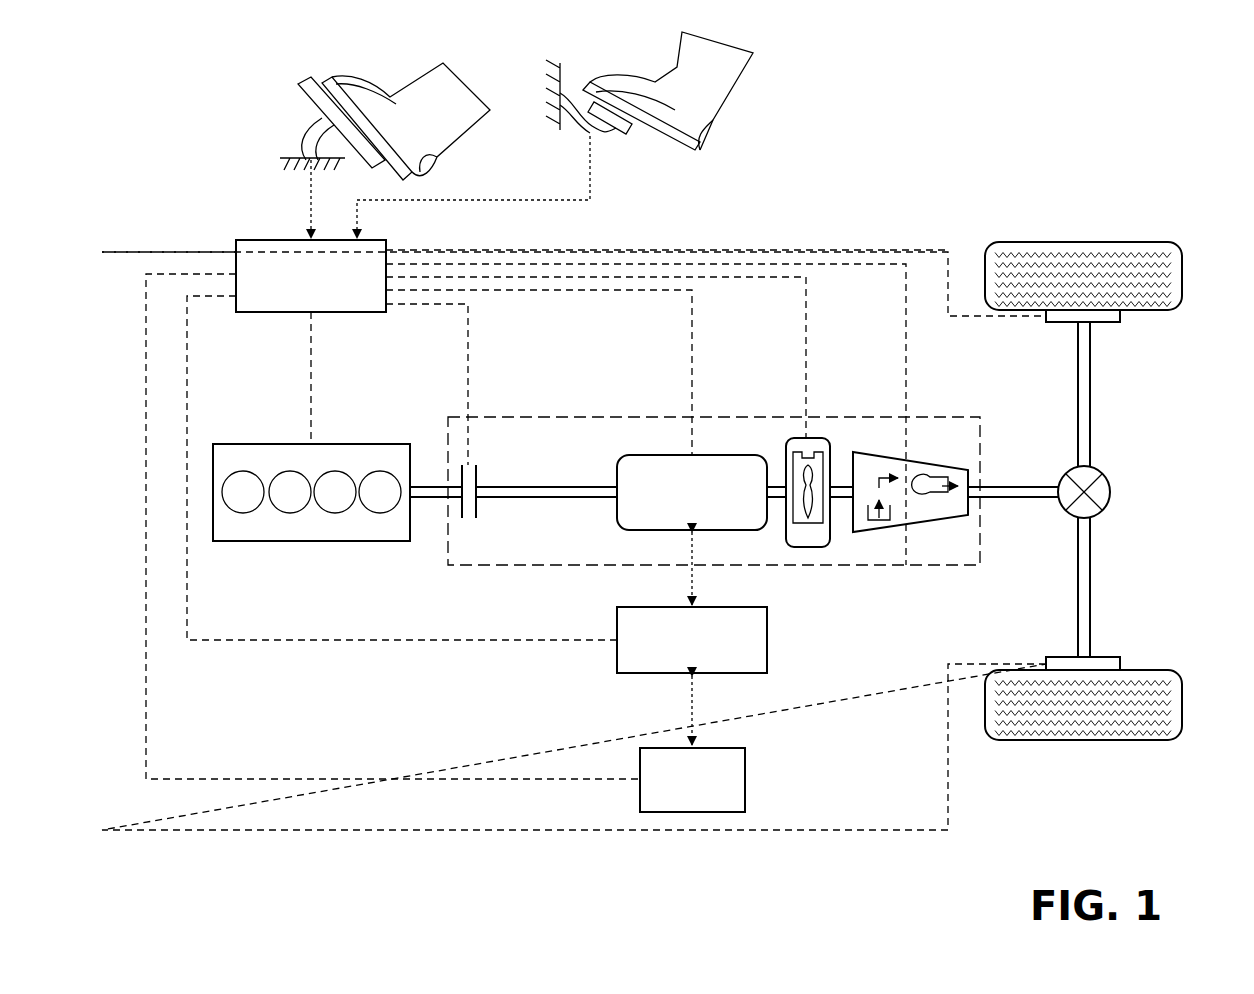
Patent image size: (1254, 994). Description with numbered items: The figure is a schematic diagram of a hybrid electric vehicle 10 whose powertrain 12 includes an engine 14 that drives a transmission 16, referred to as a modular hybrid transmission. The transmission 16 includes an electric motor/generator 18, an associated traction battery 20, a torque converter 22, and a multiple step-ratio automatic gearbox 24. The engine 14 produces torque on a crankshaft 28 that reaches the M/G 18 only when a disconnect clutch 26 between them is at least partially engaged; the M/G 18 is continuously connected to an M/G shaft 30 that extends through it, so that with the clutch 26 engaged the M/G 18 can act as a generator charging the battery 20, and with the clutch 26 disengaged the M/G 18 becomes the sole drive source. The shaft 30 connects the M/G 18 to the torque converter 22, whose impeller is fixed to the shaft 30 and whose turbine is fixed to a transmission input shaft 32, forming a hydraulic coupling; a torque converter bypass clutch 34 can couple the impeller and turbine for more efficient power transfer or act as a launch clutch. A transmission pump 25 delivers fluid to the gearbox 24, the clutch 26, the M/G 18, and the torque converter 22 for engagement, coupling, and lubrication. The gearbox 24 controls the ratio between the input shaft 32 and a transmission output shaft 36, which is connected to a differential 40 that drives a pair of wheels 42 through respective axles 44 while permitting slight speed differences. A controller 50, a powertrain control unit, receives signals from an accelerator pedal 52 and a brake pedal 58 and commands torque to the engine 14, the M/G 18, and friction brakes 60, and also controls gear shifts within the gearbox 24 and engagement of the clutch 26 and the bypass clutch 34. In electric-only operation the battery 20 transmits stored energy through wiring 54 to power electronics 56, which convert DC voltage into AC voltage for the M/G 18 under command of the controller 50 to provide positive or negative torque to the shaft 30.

The hybrid electric vehicle 10 is at (842, 155).
The powertrain 12 is at (455, 668).
The engine 14 is at (262, 444).
The transmission 16 is at (764, 417).
The electric motor/generator 18 is at (657, 455).
The traction battery 20 is at (745, 776).
The torque converter 22 is at (803, 547).
The gearbox 24 is at (905, 532).
The transmission pump 25 is at (960, 505).
The disconnect clutch 26 is at (480, 470).
The crankshaft 28 is at (446, 487).
The M/G shaft 30 is at (558, 487).
The transmission input shaft 32 is at (845, 470).
The torque converter bypass clutch 34 is at (812, 440).
The transmission output shaft 36 is at (1024, 487).
The differential 40 is at (1112, 495).
The wheels 42 is at (1085, 242).
The axles 44 is at (1092, 395).
The controller 50 is at (273, 240).
The accelerator pedal 52 is at (322, 112).
The wiring 54 is at (700, 716).
The power electronics 56 is at (767, 640).
The brake pedal 58 is at (632, 138).
The friction brakes 60 is at (1122, 318).